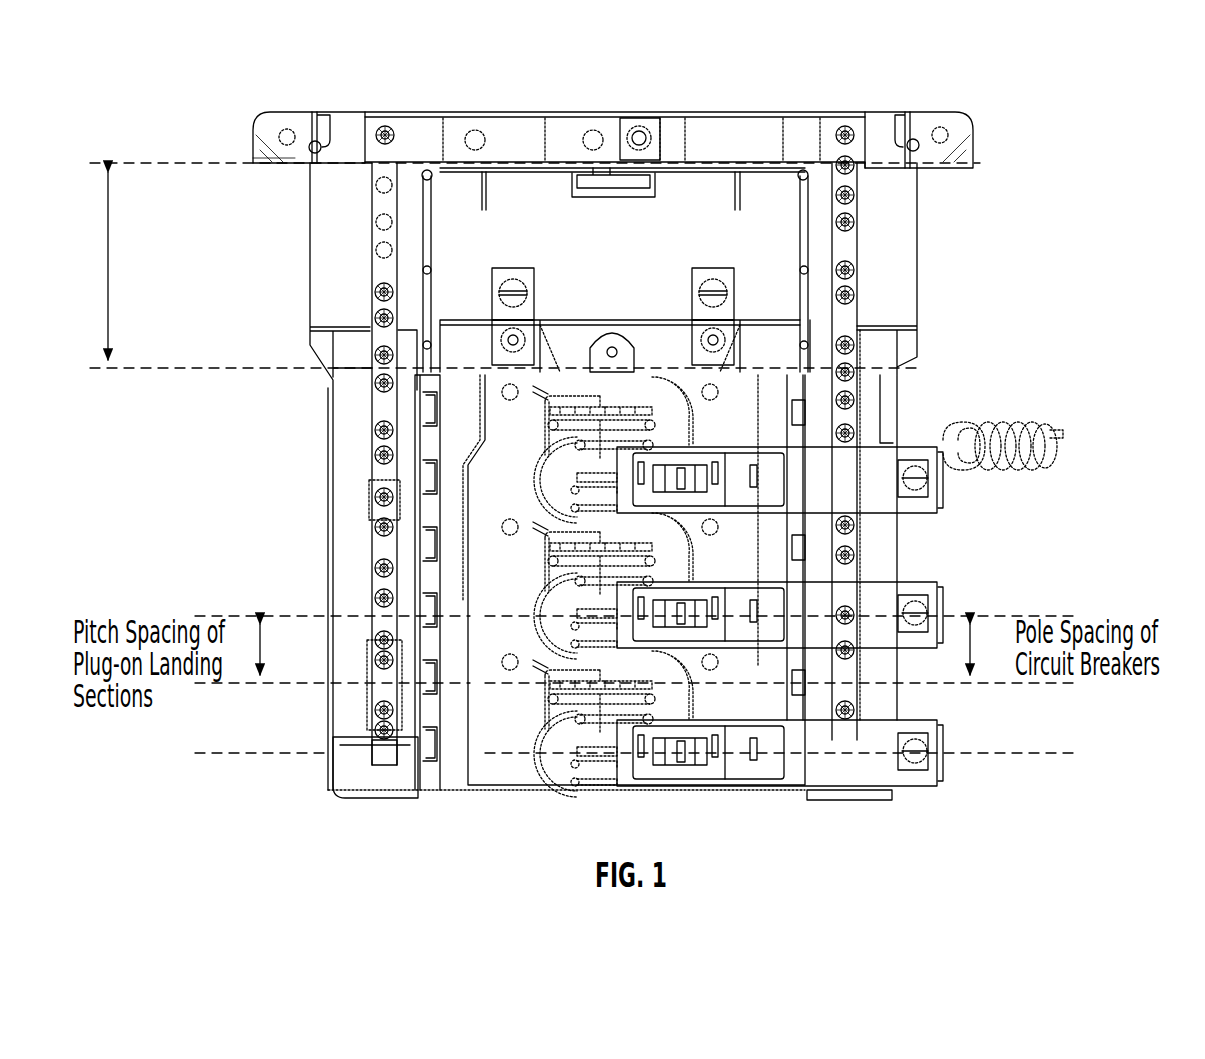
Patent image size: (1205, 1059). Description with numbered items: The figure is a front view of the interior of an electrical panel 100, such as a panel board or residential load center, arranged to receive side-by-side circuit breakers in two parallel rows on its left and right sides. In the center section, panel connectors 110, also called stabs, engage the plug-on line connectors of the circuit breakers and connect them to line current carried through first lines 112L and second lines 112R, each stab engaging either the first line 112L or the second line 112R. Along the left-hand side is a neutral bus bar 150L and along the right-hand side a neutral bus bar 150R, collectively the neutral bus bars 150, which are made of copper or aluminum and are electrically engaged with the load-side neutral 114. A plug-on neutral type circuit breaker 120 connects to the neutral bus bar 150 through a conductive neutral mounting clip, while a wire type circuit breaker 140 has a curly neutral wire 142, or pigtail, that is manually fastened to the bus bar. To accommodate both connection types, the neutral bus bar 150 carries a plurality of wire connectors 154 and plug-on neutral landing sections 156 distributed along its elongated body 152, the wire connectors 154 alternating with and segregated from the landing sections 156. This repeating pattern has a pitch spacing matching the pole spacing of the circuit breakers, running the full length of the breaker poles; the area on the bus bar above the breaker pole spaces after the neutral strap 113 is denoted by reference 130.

The electrical panel 100 is at (158, 100).
The panel connectors 110 is at (650, 402).
The first lines 112L is at (530, 274).
The second lines 112R is at (720, 274).
The neutral strap 113 is at (728, 130).
The load-side neutral 114 is at (639, 126).
The plug-on neutral type circuit breaker 120 is at (940, 588).
The area above the breaker pole spaces 130 is at (531, 265).
The wire type circuit breaker 140 is at (940, 500).
The neutral wire 142 is at (1012, 425).
The neutral bus bars 150 is at (365, 415).
The left neutral bus bar 150L is at (362, 222).
The right neutral bus bar 150R is at (862, 270).
The elongated body 152 is at (382, 765).
The wire connectors 154 is at (368, 500).
The plug-on neutral landing sections 156 is at (385, 272).